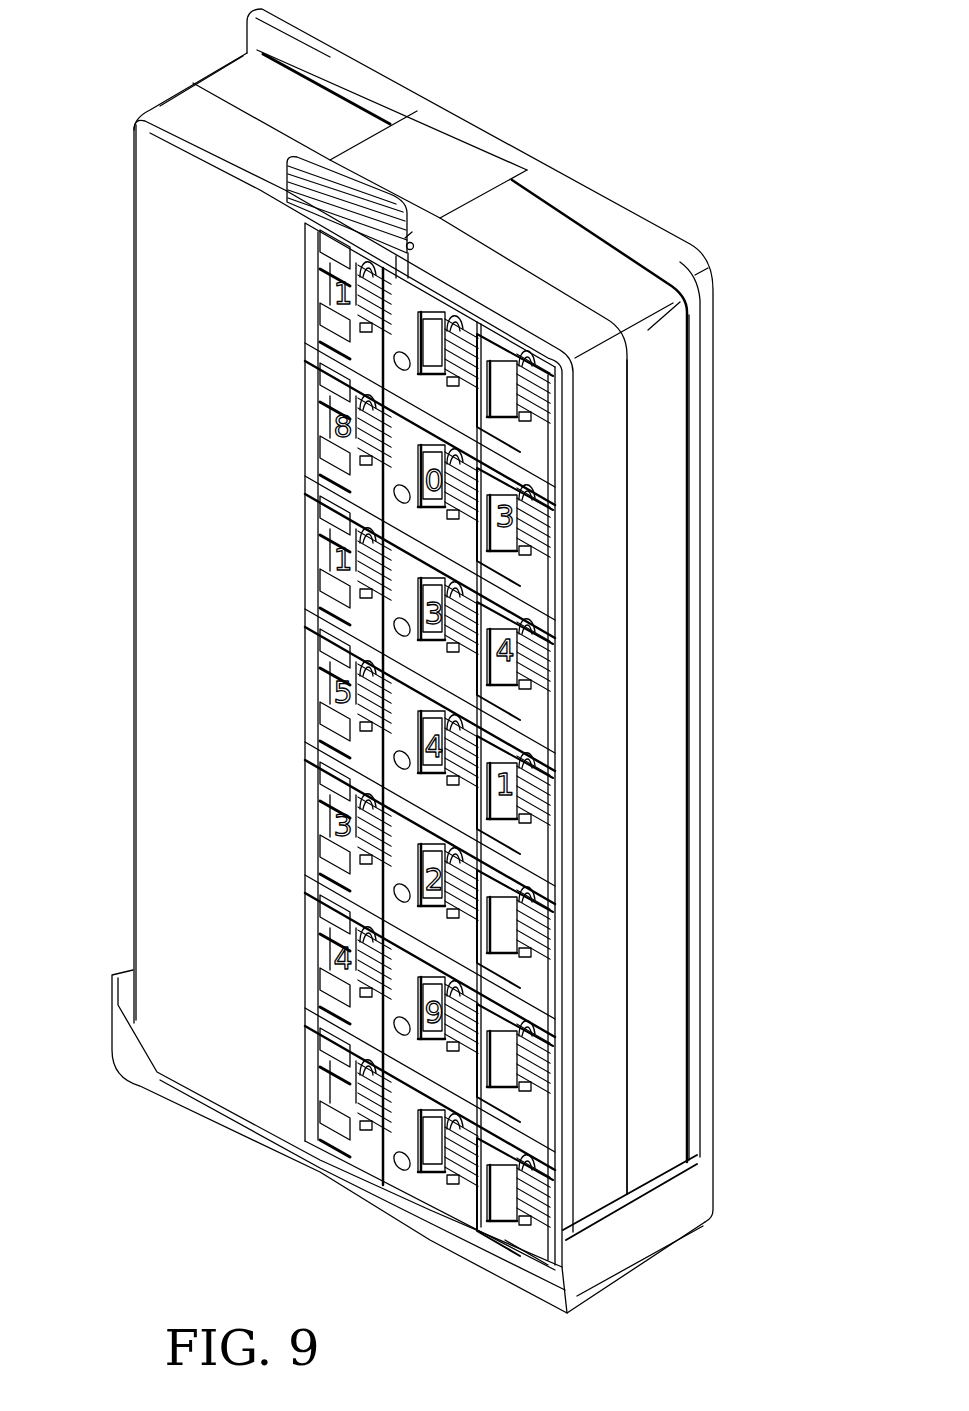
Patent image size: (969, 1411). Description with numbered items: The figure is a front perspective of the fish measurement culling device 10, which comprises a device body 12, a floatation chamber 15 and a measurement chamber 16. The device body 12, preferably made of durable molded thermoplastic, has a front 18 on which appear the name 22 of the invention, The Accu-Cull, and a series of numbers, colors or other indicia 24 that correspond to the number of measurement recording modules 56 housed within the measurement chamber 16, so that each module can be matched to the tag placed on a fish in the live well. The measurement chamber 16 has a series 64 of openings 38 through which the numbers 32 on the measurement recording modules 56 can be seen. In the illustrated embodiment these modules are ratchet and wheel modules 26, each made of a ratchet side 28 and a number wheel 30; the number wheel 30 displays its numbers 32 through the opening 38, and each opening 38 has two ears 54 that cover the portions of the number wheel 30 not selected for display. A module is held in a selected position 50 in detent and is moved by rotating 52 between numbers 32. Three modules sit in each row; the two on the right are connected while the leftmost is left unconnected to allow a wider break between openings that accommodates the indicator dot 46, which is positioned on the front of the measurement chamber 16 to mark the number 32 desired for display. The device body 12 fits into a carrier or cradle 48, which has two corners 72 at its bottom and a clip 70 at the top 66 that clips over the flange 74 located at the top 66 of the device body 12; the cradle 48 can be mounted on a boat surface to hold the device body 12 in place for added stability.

The fish measurement culling device 10 is at (788, 686).
The device body 12 is at (160, 268).
The floatation chamber 15 is at (155, 365).
The measurement chamber 16 is at (433, 325).
The front 18 is at (150, 467).
The name 22 is at (178, 785).
The indicia 24 is at (255, 942).
The ratchet and wheel module 26 is at (530, 1243).
The ratchet side 28 is at (460, 1190).
The number wheel 30 is at (437, 1185).
The numbers 32 is at (545, 960).
The opening 38 is at (545, 740).
The indicator dot 46 is at (395, 1180).
The carrier 48 is at (707, 822).
The selected position 50 is at (545, 1090).
The rotating 52 is at (545, 403).
The ears 54 is at (337, 1132).
The measurement recording modules 56 is at (312, 298).
The series of openings 64 is at (540, 600).
The top 66 is at (235, 88).
The clip 70 is at (345, 177).
The corners 72 is at (123, 1040).
The flange 74 is at (410, 242).